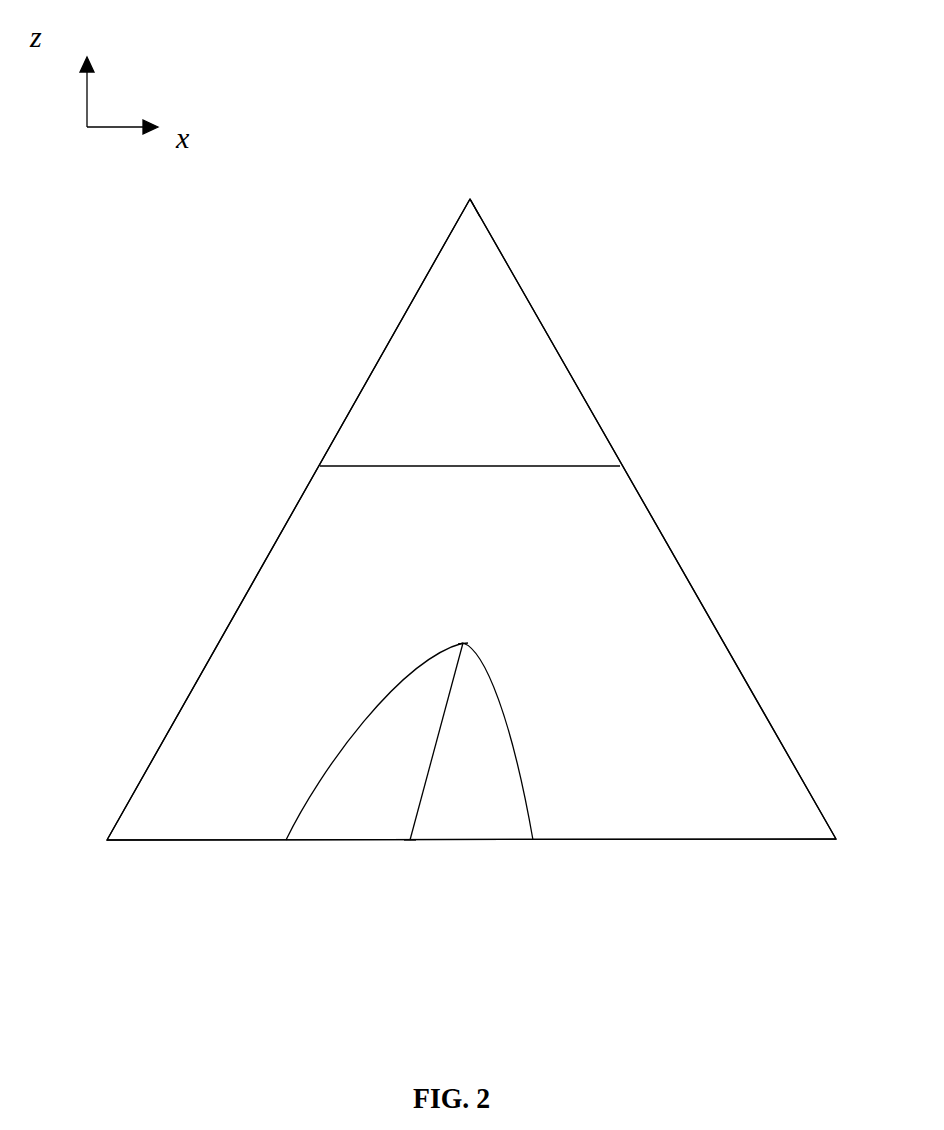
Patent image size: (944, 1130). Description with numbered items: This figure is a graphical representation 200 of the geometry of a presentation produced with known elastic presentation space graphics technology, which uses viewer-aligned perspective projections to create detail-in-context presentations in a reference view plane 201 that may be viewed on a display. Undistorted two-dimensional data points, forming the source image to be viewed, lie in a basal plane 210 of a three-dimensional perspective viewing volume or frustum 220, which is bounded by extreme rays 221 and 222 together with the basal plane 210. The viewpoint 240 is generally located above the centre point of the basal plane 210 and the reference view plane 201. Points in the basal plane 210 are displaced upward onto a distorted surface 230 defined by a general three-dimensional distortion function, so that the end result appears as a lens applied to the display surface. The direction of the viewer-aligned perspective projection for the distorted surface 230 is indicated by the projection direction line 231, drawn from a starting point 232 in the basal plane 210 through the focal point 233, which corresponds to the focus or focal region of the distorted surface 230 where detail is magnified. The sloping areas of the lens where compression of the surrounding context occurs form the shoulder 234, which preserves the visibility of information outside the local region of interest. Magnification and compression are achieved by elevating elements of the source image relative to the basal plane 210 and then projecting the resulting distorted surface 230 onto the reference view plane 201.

The graphical representation 200 is at (755, 221).
The reference view plane 201 is at (444, 466).
The basal plane 210 is at (658, 840).
The 3D perspective viewing volume or frustum 220 is at (730, 733).
The extreme ray 221 is at (713, 608).
The extreme ray 222 is at (230, 625).
The distorted surface 230 is at (517, 733).
The line FPo-FP 231 is at (442, 715).
The point FPo 232 is at (410, 840).
The point FP 233 is at (466, 641).
The shoulder 234 is at (320, 785).
The viewpoint 240 is at (478, 196).